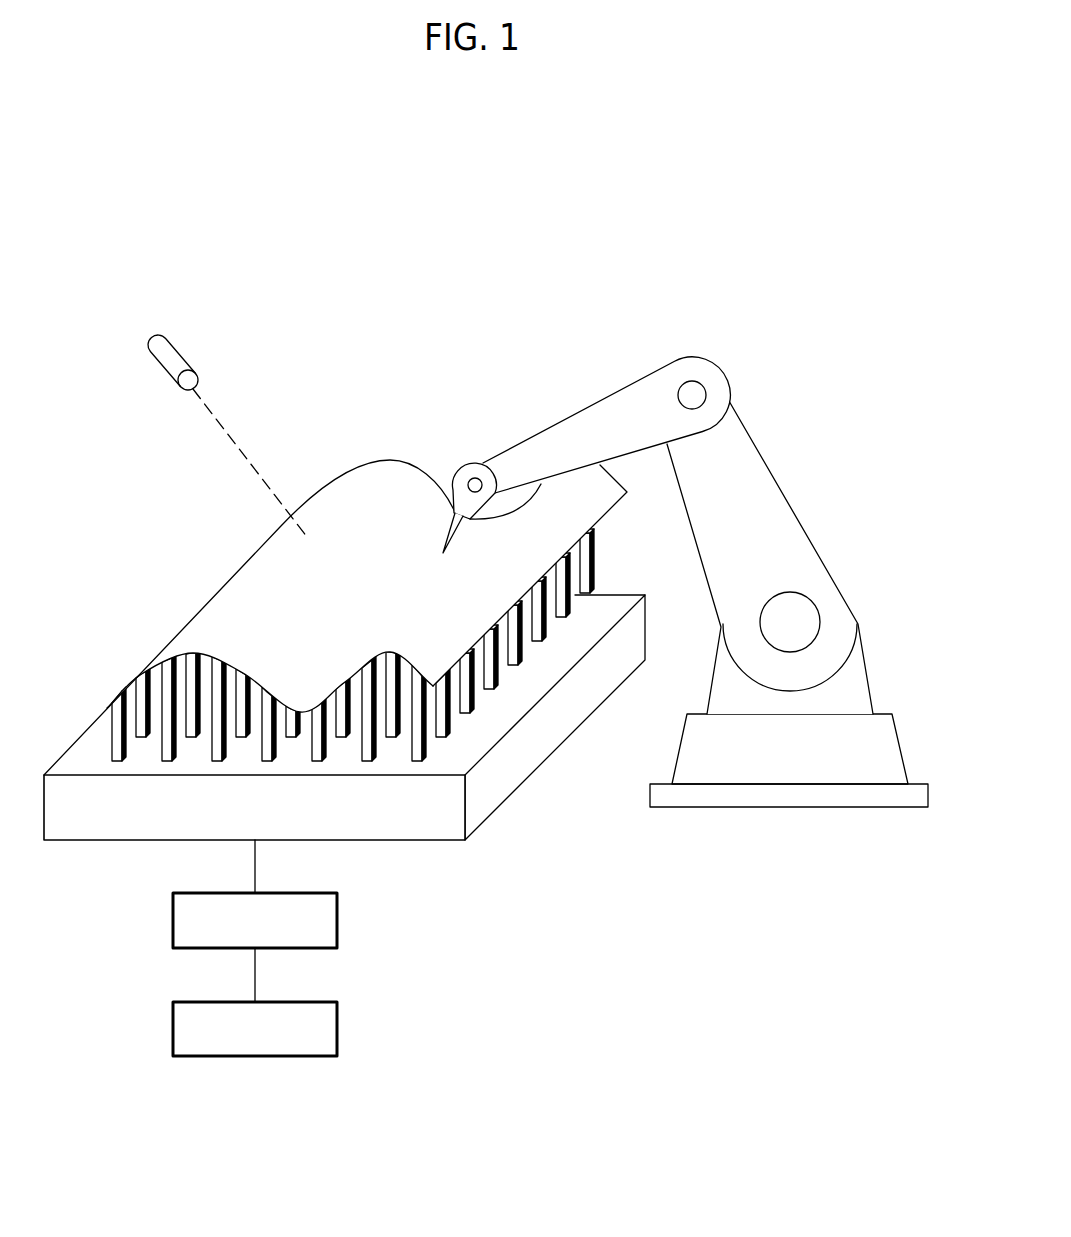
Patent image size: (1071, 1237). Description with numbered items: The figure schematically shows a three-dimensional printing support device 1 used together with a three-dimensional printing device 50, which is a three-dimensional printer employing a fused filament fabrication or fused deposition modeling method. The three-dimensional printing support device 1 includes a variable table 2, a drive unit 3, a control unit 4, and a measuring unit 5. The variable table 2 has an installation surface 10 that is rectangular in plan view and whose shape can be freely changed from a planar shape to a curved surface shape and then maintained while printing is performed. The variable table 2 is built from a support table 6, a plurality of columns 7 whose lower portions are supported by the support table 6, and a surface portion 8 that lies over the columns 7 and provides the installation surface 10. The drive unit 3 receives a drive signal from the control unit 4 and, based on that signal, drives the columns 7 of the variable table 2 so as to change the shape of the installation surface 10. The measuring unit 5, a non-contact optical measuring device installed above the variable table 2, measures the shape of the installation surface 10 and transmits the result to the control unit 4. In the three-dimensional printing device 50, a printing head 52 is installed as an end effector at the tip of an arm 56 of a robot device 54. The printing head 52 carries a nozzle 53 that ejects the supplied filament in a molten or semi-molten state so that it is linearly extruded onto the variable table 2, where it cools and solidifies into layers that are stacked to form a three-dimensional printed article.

The three-dimensional printing support device 1 is at (341, 704).
The variable table 2 is at (341, 720).
The drive unit 3 is at (338, 919).
The control unit 4 is at (338, 1028).
The measuring unit 5 is at (178, 347).
The support table 6 is at (128, 822).
The column 7 is at (168, 672).
The surface portion 8 is at (335, 586).
The installation surface 10 is at (372, 497).
The three-dimensional printing device 50 is at (680, 555).
The printing head 52 is at (450, 532).
The nozzle 53 is at (447, 556).
The robot device 54 is at (767, 445).
The arm 56 is at (637, 397).